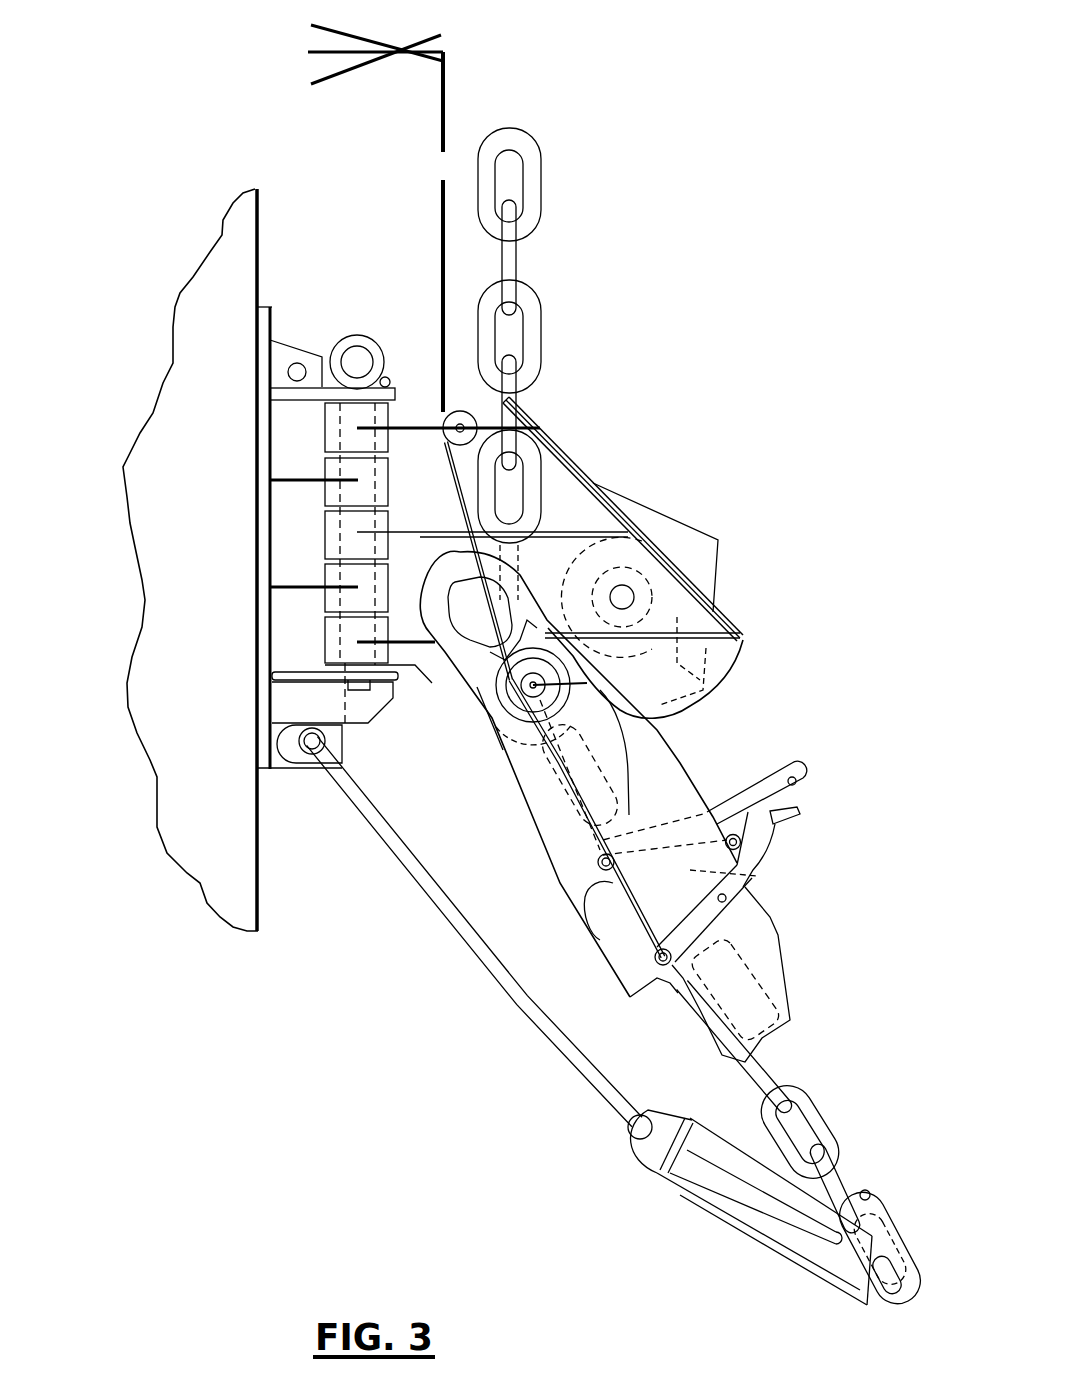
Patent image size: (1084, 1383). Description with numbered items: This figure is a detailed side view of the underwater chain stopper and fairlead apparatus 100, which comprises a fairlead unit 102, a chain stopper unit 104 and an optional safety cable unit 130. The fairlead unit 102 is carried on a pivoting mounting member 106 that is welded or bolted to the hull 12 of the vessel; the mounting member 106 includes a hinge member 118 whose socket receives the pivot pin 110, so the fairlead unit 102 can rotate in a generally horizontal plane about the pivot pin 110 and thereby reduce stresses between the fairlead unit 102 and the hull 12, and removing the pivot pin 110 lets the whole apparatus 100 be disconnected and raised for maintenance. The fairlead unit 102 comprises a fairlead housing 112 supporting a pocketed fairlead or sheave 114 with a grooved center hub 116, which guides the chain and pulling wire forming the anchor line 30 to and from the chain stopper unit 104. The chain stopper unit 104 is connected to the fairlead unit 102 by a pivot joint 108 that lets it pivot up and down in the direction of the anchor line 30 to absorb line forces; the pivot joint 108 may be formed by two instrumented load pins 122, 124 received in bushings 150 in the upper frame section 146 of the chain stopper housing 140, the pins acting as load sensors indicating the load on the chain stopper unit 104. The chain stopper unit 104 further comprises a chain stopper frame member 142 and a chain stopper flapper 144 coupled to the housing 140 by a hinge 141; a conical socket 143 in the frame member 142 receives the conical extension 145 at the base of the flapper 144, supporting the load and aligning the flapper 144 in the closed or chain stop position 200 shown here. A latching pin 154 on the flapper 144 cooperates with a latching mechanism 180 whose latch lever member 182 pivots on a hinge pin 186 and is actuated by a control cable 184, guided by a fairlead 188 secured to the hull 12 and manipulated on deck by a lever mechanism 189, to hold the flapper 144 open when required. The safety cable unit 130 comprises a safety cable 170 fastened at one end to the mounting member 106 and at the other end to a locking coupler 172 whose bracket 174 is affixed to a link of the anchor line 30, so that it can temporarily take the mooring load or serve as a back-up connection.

The hull 12 is at (211, 585).
The anchor line 30 is at (545, 318).
The chain stopper and fairlead apparatus 100 is at (685, 170).
The fairlead unit 102 is at (670, 456).
The chain stopper unit 104 is at (503, 882).
The pivoting mounting member 106 is at (292, 788).
The pivot joint 108 is at (488, 701).
The pivot pin 110 is at (350, 337).
The fairlead housing 112 is at (560, 440).
The fairlead 114 is at (720, 560).
The center hub 116 is at (718, 607).
The hinge member 118 is at (388, 492).
The instrumented load pin 122 is at (617, 683).
The instrumented load pin 124 is at (620, 712).
The safety cable unit 130 is at (600, 1170).
The housing 140 is at (708, 788).
The hinge 141 is at (780, 825).
The chain stopper frame member 142 is at (757, 876).
The conical shaped socket 143 is at (612, 928).
The chain stopper flapper 144 is at (778, 770).
The conical shape extension 145 is at (585, 895).
The upper frame section 146 is at (526, 797).
The bushing 150 is at (512, 745).
The latching pin 154 is at (800, 784).
The safety cable 170 is at (498, 970).
The locking coupler 172 is at (752, 1222).
The bracket 174 is at (878, 1212).
The latching mechanism 180 is at (657, 990).
The latch lever member 182 is at (678, 990).
The control cable 184 is at (440, 212).
The hinge pin 186 is at (768, 918).
The fairlead 188 is at (460, 410).
The lever mechanism 189 is at (375, 75).
The closed or chain stop position 200 is at (592, 866).